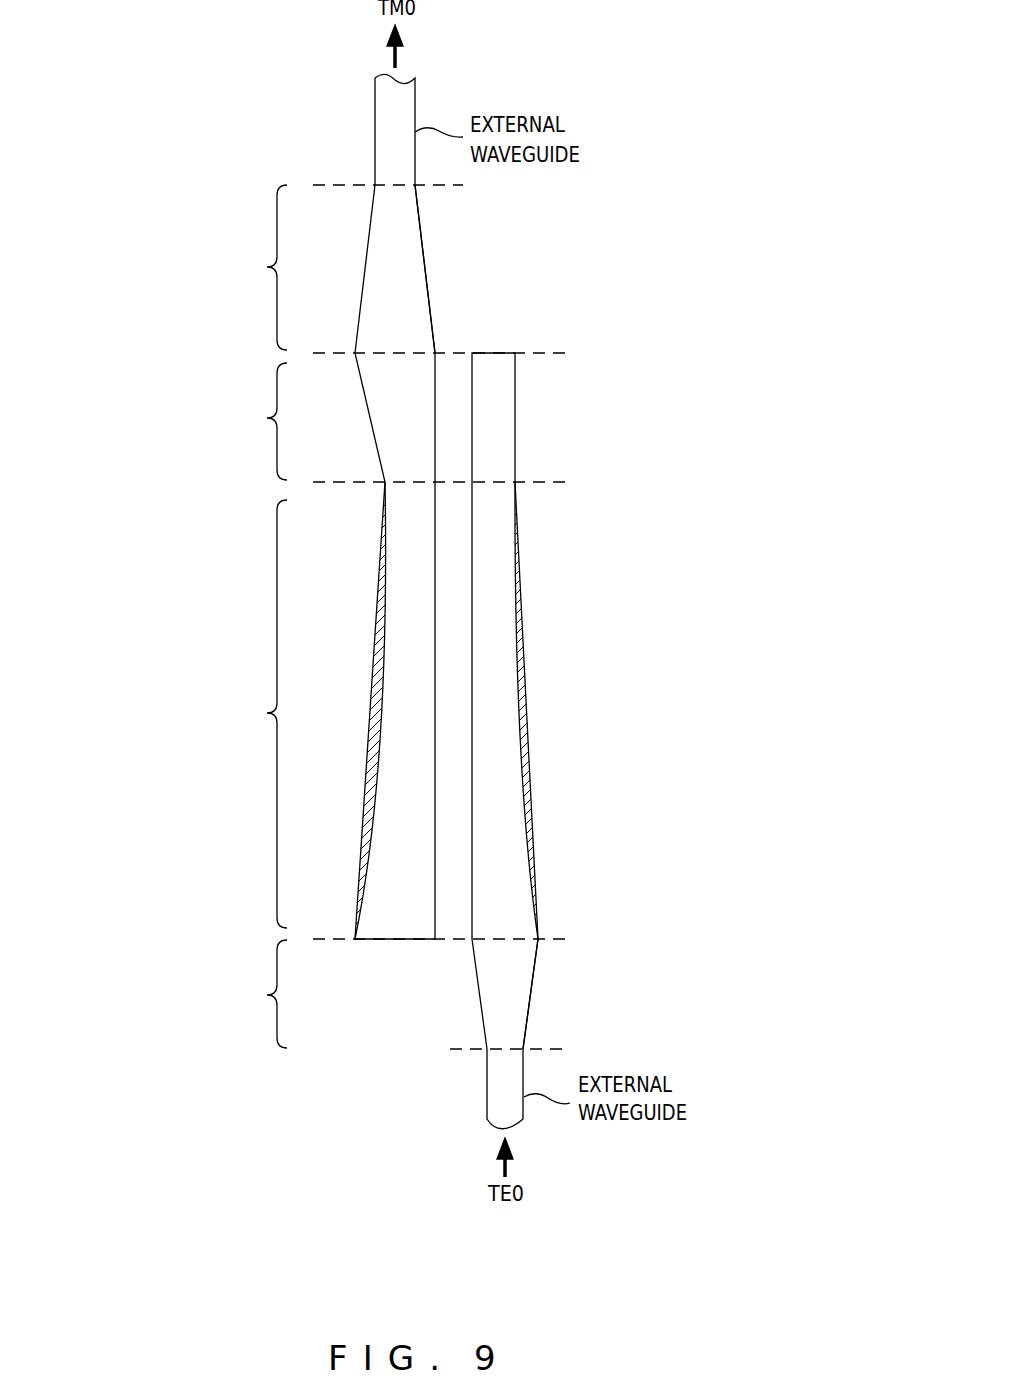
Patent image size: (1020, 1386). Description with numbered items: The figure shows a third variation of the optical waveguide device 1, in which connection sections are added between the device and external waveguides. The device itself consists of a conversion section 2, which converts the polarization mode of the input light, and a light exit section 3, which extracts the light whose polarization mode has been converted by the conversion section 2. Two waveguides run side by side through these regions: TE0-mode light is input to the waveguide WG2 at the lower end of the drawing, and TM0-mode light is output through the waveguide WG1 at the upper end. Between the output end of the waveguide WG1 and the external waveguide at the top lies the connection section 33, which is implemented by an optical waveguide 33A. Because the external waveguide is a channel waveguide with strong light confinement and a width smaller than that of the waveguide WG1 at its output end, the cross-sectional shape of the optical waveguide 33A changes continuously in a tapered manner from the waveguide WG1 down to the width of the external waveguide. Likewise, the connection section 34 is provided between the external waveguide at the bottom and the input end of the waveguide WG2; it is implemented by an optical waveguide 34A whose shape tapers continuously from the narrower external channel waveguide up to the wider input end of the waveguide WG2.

The optical waveguide device 1 is at (704, 175).
The conversion section 2 is at (206, 714).
The light exit section 3 is at (206, 421).
The connection section 33 is at (206, 267).
The connection section 34 is at (206, 994).
The optical waveguide 33A is at (427, 287).
The optical waveguide 34A is at (530, 1000).
The waveguide WG1 is at (433, 532).
The waveguide WG2 is at (549, 741).